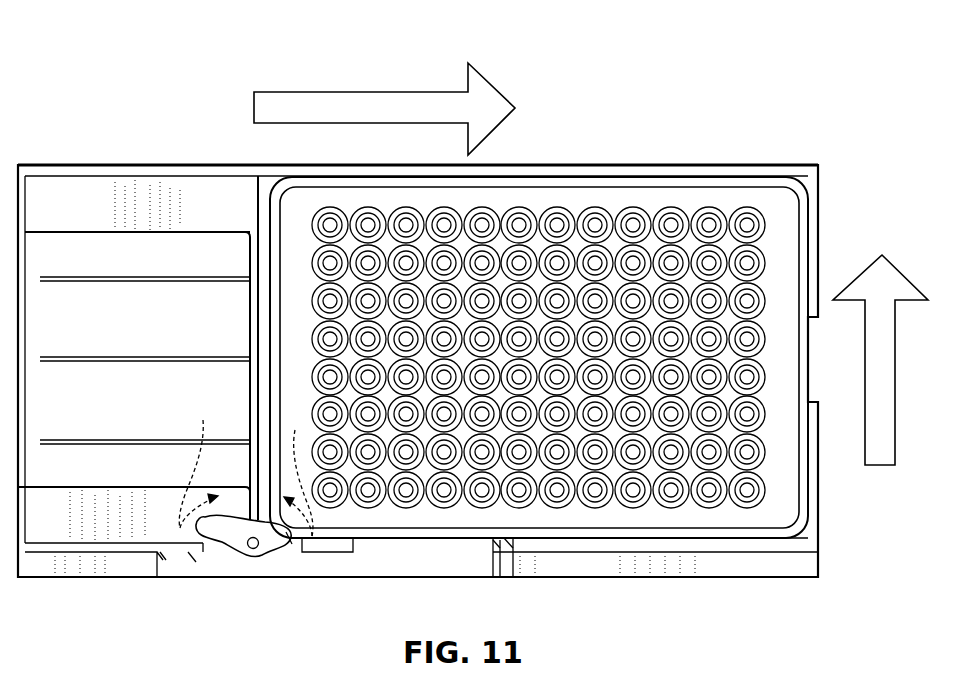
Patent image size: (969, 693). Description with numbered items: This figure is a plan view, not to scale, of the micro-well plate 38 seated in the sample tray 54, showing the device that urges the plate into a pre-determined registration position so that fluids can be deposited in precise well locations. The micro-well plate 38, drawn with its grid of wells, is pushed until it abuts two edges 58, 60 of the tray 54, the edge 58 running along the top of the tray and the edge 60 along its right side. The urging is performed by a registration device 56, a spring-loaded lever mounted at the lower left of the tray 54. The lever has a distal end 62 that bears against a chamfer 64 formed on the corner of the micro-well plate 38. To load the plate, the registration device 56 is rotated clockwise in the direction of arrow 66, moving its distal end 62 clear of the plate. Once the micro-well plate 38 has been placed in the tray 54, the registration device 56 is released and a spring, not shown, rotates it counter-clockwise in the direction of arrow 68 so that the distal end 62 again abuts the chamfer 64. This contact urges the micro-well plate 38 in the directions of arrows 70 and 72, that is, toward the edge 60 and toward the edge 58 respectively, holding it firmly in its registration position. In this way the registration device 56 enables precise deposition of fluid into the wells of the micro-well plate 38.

The micro-well plate 38 is at (607, 196).
The sample tray 54 is at (82, 578).
The registration device 56 is at (215, 536).
The edge 58 is at (775, 165).
The edge 60 is at (822, 168).
The distal end 62 is at (268, 548).
The chamfer 64 is at (283, 545).
The arrow 66 is at (198, 463).
The arrow 68 is at (298, 471).
The arrow 70 is at (330, 102).
The arrow 72 is at (882, 255).